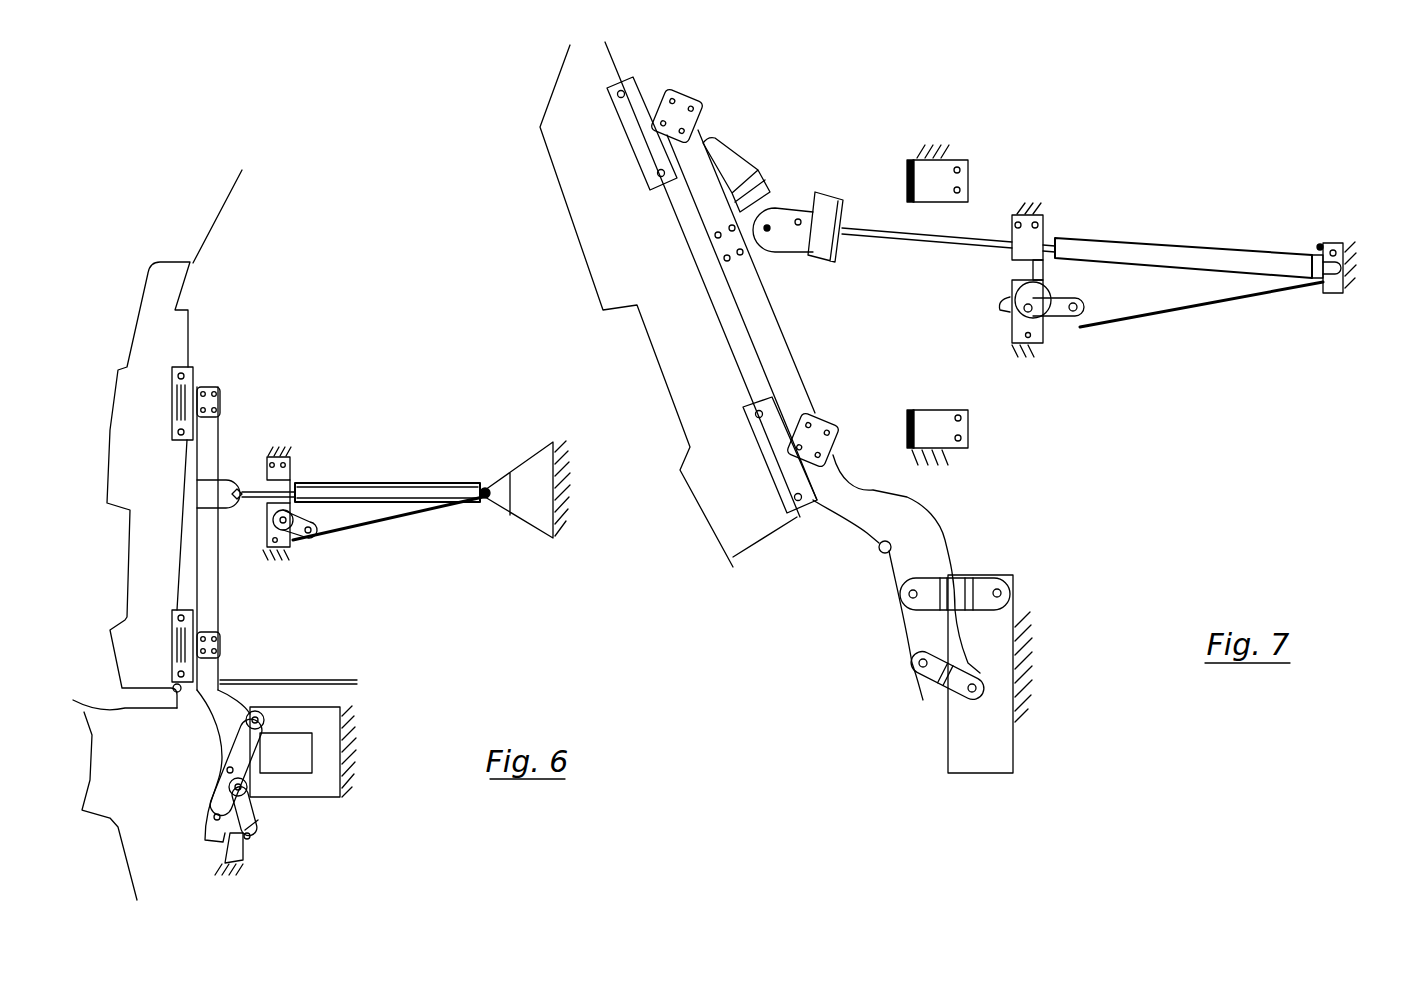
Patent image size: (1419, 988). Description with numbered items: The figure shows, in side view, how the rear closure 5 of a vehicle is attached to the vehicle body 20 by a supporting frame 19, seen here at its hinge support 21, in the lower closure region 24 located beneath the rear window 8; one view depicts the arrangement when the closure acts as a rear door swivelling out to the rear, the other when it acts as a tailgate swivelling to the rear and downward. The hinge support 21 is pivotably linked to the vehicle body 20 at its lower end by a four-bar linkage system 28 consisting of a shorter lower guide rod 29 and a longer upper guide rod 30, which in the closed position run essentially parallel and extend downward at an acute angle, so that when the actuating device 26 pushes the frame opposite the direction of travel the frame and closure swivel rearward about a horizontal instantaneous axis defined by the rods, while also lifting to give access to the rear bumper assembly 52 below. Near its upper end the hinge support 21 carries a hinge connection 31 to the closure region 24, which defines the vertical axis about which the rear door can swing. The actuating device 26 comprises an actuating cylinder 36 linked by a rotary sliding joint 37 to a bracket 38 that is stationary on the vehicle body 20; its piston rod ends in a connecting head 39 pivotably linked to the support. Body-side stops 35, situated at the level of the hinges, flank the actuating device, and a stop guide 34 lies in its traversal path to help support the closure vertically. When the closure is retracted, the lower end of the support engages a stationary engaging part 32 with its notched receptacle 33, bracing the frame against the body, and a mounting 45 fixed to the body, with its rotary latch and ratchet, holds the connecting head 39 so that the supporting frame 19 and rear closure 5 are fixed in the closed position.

In FIG. 6, the rear closure 5 is at (143, 257).
In FIG. 7, the rear closure 5 is at (537, 170).
In FIG. 6, the rear window 8 is at (233, 198).
In FIG. 6, the supporting frame 19 is at (250, 428).
In FIG. 7, the supporting frame 19 is at (817, 347).
In FIG. 6, the vehicle body 20 is at (560, 487).
In FIG. 7, the vehicle body 20 is at (943, 147).
In FIG. 6, the hinge support 21 is at (213, 603).
In FIG. 7, the hinge support 21 is at (800, 387).
In FIG. 6, the lower closure region 24 is at (127, 488).
In FIG. 7, the lower closure region 24 is at (700, 484).
In FIG. 6, the actuating device 26 is at (401, 462).
In FIG. 7, the actuating device 26 is at (1173, 216).
In FIG. 6, the four-bar linkage system 28 is at (206, 788).
In FIG. 7, the four-bar linkage system 28 is at (894, 628).
In FIG. 7, the lower guide rod 29 is at (922, 697).
In FIG. 7, the upper guide rod 30 is at (983, 587).
In FIG. 6, the hinge connection 31 is at (207, 388).
In FIG. 7, the hinge connection 31 is at (680, 118).
In FIG. 6, the engaging part 32 is at (246, 852).
In FIG. 6, the notched receptacle 33 is at (255, 830).
In FIG. 6, the stop guide 34 is at (324, 454).
In FIG. 7, the stop guide 34 is at (948, 240).
In FIG. 6, the stop 35 is at (279, 475).
In FIG. 7, the stop 35 is at (930, 190).
In FIG. 7, the actuating cylinder 36 is at (1235, 263).
In FIG. 6, the rotary sliding joint 37 is at (485, 482).
In FIG. 7, the rotary sliding joint 37 is at (1320, 245).
In FIG. 6, the bracket 38 is at (536, 468).
In FIG. 7, the bracket 38 is at (1342, 290).
In FIG. 7, the connecting head 39 is at (802, 220).
In FIG. 6, the mounting 45 is at (373, 537).
In FIG. 7, the mounting 45 is at (1048, 324).
In FIG. 6, the rear bumper assembly 52 is at (145, 765).